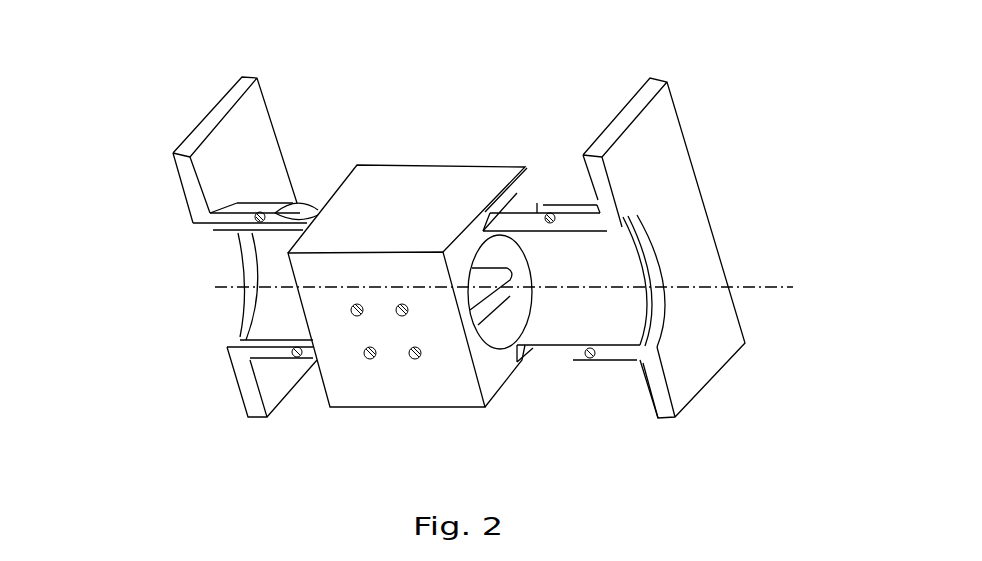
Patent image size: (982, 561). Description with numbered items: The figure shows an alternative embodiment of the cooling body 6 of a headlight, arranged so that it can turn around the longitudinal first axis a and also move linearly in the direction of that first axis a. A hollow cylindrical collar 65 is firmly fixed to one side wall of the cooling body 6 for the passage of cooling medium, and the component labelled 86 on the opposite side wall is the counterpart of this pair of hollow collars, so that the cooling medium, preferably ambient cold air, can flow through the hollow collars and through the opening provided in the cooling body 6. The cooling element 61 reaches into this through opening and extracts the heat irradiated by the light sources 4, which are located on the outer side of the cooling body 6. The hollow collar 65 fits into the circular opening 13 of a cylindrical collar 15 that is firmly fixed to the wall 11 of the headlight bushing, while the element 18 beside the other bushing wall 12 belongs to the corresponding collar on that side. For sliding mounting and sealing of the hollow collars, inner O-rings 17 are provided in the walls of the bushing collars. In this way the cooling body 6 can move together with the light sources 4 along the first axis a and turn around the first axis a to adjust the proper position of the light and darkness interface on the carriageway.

The light sources 4 is at (370, 353).
The cooling body 6 is at (405, 215).
The wall of the headlight bushing 11 is at (217, 102).
The wall of the headlight bushing 12 is at (640, 110).
The circular opening 13 is at (670, 262).
The cylindrical collar 15 is at (255, 205).
The inner O-ring 17 is at (258, 213).
The support 18 is at (570, 210).
The cooling element 61 is at (520, 297).
The hollow cylindrical collar 65 is at (313, 205).
The guide 86 is at (493, 160).
The first axis a is at (793, 288).